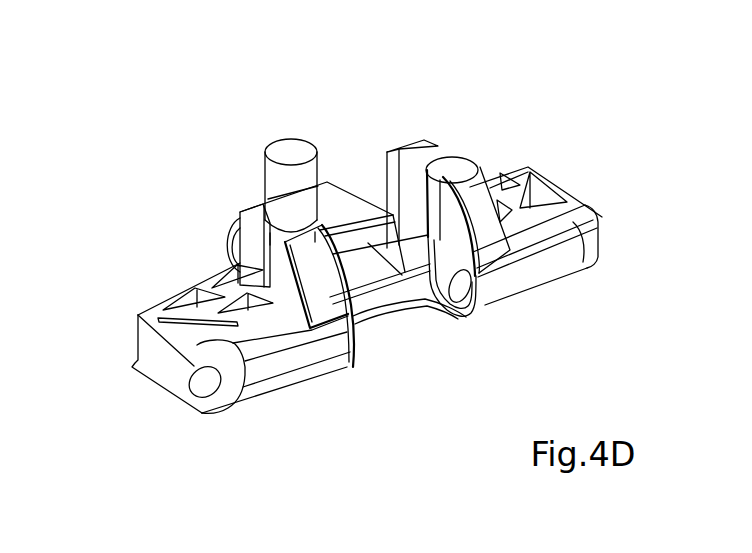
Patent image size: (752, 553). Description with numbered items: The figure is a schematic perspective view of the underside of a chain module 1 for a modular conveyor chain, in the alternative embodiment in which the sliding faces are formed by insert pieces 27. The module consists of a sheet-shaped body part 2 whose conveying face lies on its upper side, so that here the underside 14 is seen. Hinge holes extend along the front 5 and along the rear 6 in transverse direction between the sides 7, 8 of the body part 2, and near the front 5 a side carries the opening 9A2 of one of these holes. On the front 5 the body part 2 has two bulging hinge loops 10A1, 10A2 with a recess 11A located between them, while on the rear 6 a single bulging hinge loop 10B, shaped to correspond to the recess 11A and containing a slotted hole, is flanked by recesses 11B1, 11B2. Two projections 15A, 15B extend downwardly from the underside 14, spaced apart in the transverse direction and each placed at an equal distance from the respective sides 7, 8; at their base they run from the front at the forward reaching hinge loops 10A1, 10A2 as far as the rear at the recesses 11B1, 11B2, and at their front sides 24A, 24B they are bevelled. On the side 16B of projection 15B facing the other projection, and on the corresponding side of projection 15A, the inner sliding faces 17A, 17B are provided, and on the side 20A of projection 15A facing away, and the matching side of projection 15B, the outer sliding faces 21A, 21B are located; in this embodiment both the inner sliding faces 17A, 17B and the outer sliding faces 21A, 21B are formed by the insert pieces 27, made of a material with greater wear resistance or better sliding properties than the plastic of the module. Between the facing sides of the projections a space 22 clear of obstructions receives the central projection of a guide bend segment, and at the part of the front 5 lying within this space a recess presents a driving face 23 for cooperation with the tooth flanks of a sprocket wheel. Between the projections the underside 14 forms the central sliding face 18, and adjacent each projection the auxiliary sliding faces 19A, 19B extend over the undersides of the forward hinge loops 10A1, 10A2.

The chain module 1 is at (127, 389).
The sheet-shaped body part 2 is at (143, 309).
The front 5 is at (263, 373).
The rear 6 is at (332, 183).
The side 7 is at (168, 362).
The side 8 is at (537, 188).
The opening 9A2 is at (207, 388).
The bulging hinge loop 10A1 is at (575, 255).
The bulging hinge loop 10A2 is at (290, 344).
The bulging hinge loop 10B is at (226, 240).
The recess 11A is at (387, 343).
The recess 11B1 is at (544, 157).
The recess 11B2 is at (197, 281).
The underside 14 is at (528, 168).
The projection 15A is at (351, 327).
The projection 15B is at (480, 250).
The side facing the other projection 16B is at (398, 175).
The inner sliding face 17A is at (305, 140).
The inner sliding face 17B is at (431, 193).
The central sliding face 18 is at (345, 205).
The auxiliary sliding face 19A is at (248, 328).
The auxiliary sliding face 19B is at (559, 210).
The side facing away 20A is at (253, 262).
The outer sliding face 21A is at (277, 188).
The outer sliding face 21B is at (464, 152).
The space 22 is at (353, 186).
The driving face 23 is at (454, 319).
The front side 24A is at (317, 308).
The front side 24B is at (557, 240).
The insert piece 27 is at (283, 152).